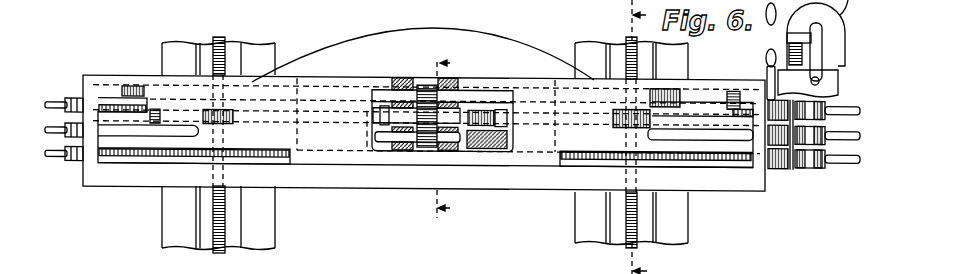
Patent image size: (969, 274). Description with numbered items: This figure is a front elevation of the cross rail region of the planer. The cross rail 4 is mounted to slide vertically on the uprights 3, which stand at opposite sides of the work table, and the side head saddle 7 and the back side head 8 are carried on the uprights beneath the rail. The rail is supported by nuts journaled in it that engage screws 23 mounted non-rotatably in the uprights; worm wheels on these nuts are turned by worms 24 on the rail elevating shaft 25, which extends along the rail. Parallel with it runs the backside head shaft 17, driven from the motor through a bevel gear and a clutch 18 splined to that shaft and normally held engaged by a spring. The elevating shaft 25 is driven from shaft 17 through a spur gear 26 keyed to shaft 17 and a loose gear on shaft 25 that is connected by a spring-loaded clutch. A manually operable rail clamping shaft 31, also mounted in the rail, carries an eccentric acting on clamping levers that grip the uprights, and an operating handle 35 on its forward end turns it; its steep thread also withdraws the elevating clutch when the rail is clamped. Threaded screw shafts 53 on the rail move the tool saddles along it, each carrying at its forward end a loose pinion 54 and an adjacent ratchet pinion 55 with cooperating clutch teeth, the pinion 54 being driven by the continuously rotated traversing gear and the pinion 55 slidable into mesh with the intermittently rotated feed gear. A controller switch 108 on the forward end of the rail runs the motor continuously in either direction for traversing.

The upright 3 is at (165, 233).
The cross rail 4 is at (142, 74).
The side head saddle 7 is at (452, 137).
The back side head 8 is at (646, 137).
The backside head shaft 17 is at (378, 92).
The clutch 18 is at (690, 93).
The screw 23 is at (215, 250).
The worm 24 is at (422, 41).
The rail elevating shaft 25 is at (321, 128).
The spur gear 26 is at (423, 80).
The rail clamping shaft 31 is at (382, 143).
The operating handle 35 is at (767, 54).
The screw shaft 53 is at (50, 195).
The pinion 54 is at (780, 173).
The ratchet pinion 55 is at (808, 173).
The controller switch 108 is at (717, 266).